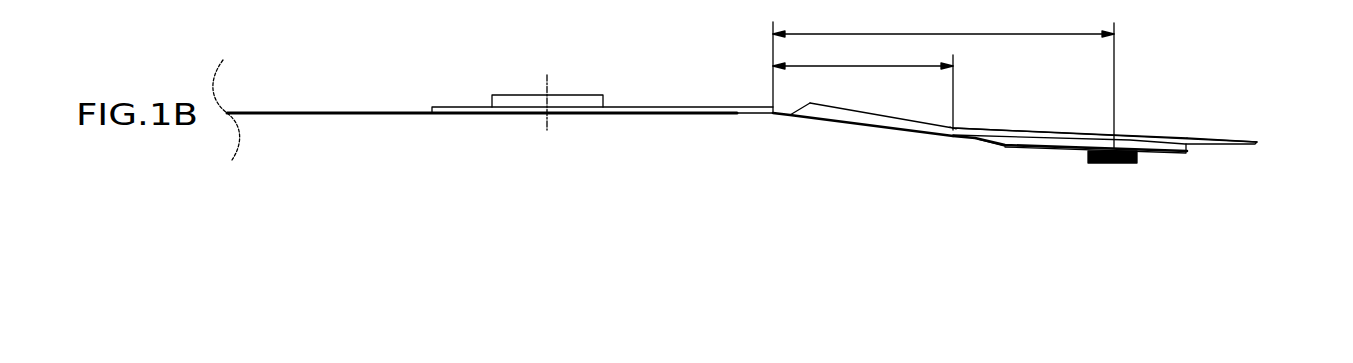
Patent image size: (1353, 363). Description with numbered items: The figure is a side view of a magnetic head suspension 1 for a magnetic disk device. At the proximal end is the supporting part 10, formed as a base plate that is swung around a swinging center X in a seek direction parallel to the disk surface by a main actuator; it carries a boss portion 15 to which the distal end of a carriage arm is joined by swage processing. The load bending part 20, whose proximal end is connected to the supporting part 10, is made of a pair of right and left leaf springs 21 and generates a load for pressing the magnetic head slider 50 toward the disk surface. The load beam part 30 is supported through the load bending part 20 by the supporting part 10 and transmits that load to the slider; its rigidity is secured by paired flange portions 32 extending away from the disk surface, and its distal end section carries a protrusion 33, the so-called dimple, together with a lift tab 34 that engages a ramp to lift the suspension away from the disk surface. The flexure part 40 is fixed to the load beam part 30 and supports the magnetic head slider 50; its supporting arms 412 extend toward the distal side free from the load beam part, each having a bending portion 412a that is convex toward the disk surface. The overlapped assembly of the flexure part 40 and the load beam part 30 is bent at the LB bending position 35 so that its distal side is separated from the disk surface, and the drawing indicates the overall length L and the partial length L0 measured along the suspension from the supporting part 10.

The magnetic head suspension 1 is at (667, 60).
The supporting part 10 is at (456, 102).
The boss portion 15 is at (578, 97).
The swinging center X is at (543, 77).
The total length L is at (943, 81).
The inclined length L0 is at (863, 88).
The load bending part 20 is at (790, 123).
The leaf spring 21 is at (793, 112).
The load beam part 30 is at (948, 148).
The flange portion 32 is at (980, 130).
The protrusion 33 is at (1113, 148).
The lift tab 34 is at (1257, 143).
The LB bending position 35 is at (952, 128).
The flexure part 40 is at (1036, 171).
The supporting arm 412 is at (1060, 150).
The bending portion 412a is at (1008, 147).
The magnetic head slider 50 is at (1125, 165).